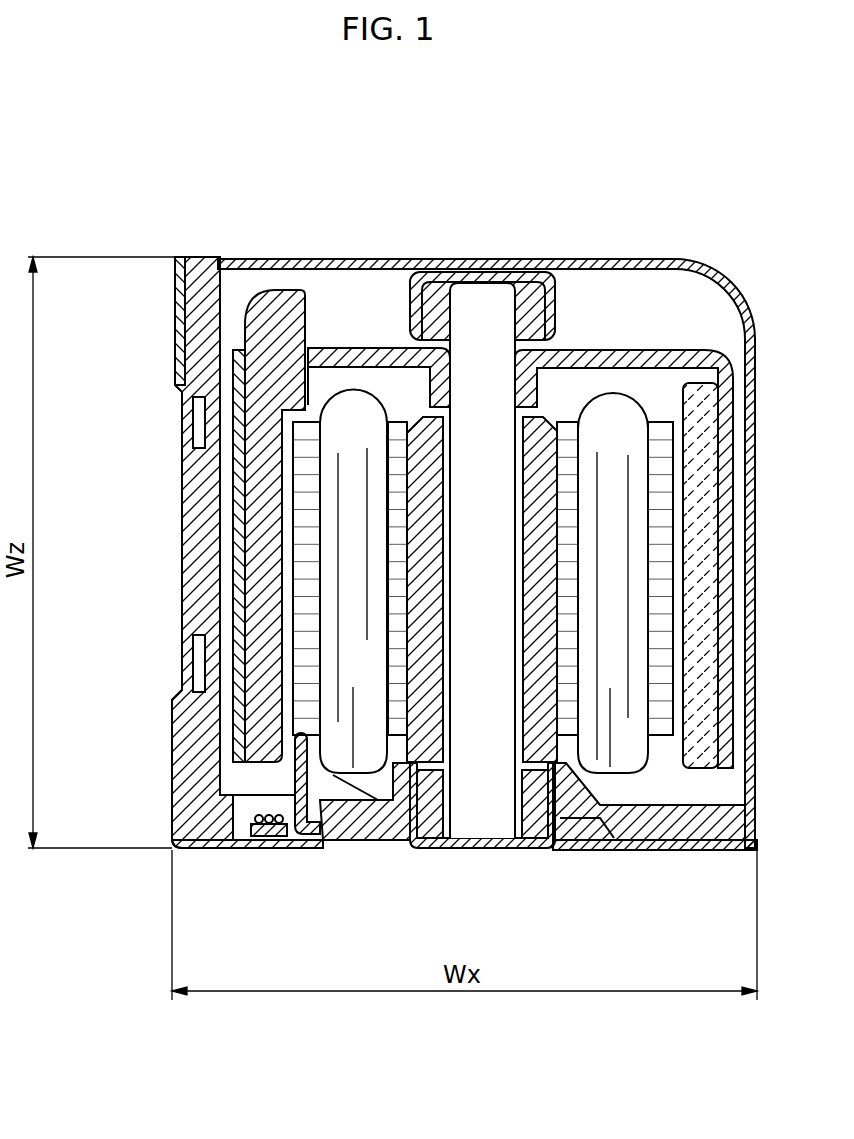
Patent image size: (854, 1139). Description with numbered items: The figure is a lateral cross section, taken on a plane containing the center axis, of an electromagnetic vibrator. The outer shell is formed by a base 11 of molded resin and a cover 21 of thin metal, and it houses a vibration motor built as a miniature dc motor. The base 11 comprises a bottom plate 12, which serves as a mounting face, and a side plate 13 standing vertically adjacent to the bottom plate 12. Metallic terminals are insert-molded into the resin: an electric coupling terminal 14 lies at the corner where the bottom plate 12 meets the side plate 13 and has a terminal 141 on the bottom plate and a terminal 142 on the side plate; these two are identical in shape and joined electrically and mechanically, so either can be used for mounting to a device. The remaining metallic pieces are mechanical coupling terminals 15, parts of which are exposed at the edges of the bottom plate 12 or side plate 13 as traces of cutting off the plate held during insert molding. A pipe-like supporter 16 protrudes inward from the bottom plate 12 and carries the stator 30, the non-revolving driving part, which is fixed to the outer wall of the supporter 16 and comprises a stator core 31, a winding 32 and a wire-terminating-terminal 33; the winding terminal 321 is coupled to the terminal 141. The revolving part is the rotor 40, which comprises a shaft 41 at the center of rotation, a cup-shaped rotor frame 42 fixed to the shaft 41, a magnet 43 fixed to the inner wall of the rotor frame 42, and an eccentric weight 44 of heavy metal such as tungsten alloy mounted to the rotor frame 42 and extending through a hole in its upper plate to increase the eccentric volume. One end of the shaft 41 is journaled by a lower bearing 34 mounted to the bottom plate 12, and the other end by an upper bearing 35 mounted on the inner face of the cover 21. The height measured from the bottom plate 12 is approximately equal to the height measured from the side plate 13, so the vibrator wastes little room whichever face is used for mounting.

The base 11 is at (183, 540).
The bottom plate 12 is at (657, 850).
The side plate 13 is at (200, 497).
The electric coupling terminal 14 is at (240, 848).
The terminal on the bottom plate 141 is at (207, 848).
The terminal on the side plate 142 is at (173, 720).
The mechanical coupling terminal 15 is at (180, 297).
The supporter 16 is at (540, 432).
The cover 21 is at (678, 262).
The stator 30 is at (658, 538).
The stator core 31 is at (397, 437).
The winding 32 is at (347, 407).
The winding terminal 321 is at (277, 841).
The wire-terminating-terminal 33 is at (320, 850).
The lower bearing 34 is at (433, 848).
The upper bearing 35 is at (530, 290).
The rotor 40 is at (370, 348).
The shaft 41 is at (483, 302).
The rotor frame 42 is at (688, 352).
The magnet 43 is at (702, 757).
The eccentric weight 44 is at (273, 317).